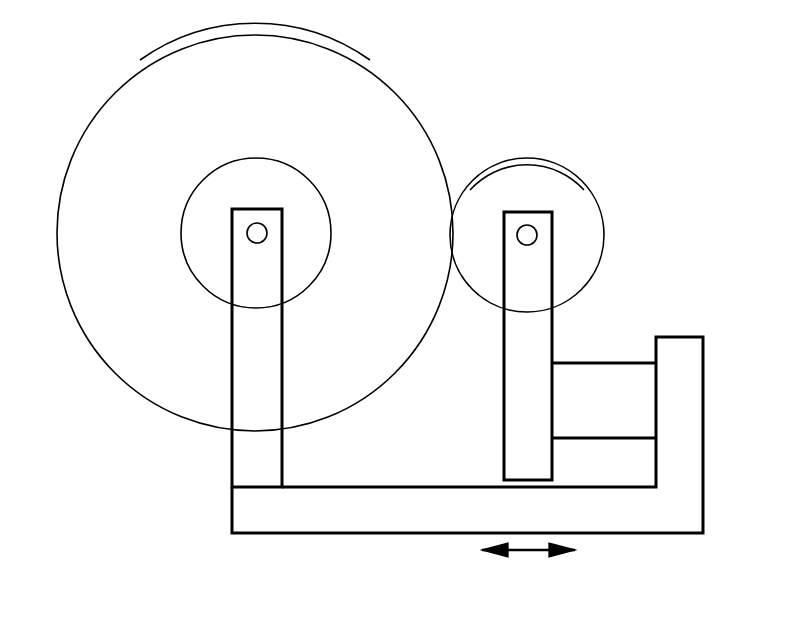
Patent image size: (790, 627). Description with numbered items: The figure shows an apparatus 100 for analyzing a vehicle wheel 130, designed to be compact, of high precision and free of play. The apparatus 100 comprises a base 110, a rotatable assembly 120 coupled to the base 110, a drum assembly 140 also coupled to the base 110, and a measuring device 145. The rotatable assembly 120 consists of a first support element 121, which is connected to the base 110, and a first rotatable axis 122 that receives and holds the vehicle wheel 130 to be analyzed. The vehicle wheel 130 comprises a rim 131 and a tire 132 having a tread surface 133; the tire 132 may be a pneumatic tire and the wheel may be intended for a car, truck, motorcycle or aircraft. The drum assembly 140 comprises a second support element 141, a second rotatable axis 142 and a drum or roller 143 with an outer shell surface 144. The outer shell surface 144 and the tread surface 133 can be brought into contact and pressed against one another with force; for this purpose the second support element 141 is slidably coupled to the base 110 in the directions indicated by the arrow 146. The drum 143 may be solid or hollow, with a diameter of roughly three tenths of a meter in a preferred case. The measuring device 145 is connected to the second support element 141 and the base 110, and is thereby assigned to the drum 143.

The apparatus 100 is at (618, 33).
The base 110 is at (327, 486).
The rotatable assembly 120 is at (108, 418).
The first support element 121 is at (228, 440).
The first rotatable axis 122 is at (247, 233).
The vehicle wheel 130 is at (473, 121).
The rim 131 is at (293, 200).
The tire 132 is at (328, 100).
The tread surface 133 is at (257, 35).
The drum assembly 140 is at (607, 336).
The second support element 141 is at (504, 378).
The second rotatable axis 142 is at (537, 235).
The drum 143 is at (582, 219).
The outer shell surface 144 is at (527, 158).
The measuring device 145 is at (633, 363).
The arrow 146 is at (528, 565).